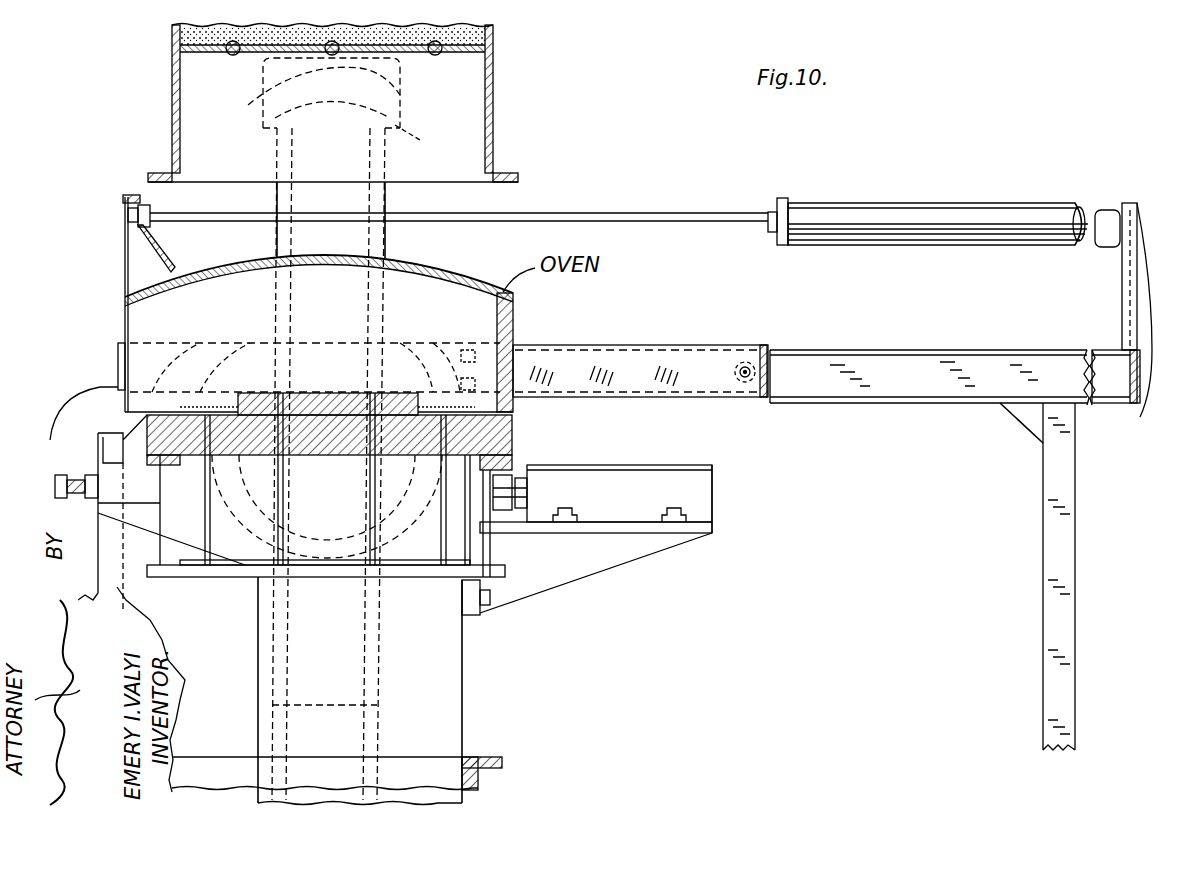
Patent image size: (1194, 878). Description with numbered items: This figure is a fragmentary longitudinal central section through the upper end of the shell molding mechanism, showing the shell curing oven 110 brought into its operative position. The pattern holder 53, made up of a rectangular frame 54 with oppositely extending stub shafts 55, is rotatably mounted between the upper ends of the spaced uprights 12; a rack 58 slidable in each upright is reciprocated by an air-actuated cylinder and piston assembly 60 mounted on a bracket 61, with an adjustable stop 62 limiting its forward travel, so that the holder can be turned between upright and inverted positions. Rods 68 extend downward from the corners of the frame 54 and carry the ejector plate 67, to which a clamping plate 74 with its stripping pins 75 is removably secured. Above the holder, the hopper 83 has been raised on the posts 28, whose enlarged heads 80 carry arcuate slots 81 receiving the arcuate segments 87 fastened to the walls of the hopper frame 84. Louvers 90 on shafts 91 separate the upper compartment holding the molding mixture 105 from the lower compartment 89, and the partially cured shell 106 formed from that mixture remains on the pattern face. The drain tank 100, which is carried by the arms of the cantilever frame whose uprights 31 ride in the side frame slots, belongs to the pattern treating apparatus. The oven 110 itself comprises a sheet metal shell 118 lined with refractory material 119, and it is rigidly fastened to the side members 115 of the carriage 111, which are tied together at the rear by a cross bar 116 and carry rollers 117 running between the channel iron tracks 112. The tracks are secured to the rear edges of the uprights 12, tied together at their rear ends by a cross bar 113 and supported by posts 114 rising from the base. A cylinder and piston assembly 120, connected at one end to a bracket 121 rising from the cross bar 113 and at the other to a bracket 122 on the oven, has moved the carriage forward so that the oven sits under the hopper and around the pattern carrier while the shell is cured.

The uprights 12 is at (452, 688).
The posts 28 is at (277, 197).
The uprights 31 is at (122, 586).
The pattern holder 53 is at (524, 433).
The rectangular frame 54 is at (153, 447).
The stub shafts 55 is at (325, 403).
The rack 58 is at (518, 475).
The air-actuated cylinder and piston assemblies 60 is at (627, 468).
The brackets 61 is at (602, 565).
The adjustable stops 62 is at (75, 472).
The ejector plate 67 is at (503, 578).
The rods 68 is at (98, 508).
The clamping plate 74 is at (245, 565).
The stripping pins 75 is at (280, 470).
The heads 80 is at (421, 144).
The arcuate slots 81 is at (322, 112).
The hopper 83 is at (502, 109).
The rectangular frame 84 is at (172, 118).
The arcuate segments 87 is at (248, 100).
The lower compartment 89 is at (452, 180).
The louvers 90 is at (432, 55).
The shafts 91 is at (232, 55).
The drain tank 100 is at (482, 788).
The molding mixture 105 is at (493, 38).
The shell 106 is at (325, 361).
The shell curing oven 110 is at (477, 270).
The carriage 111 is at (683, 344).
The channel iron tracks 112 is at (893, 392).
The cross bar 113 is at (1145, 410).
The posts 114 is at (1050, 618).
The side members 115 is at (620, 368).
The cross bar 116 is at (790, 398).
The rollers 117 is at (530, 370).
The sheet metal shell 118 is at (250, 262).
The refractory material 119 is at (238, 283).
The cylinder and piston assembly 120 is at (998, 215).
The bracket 121 is at (1128, 297).
The bracket 122 is at (130, 262).